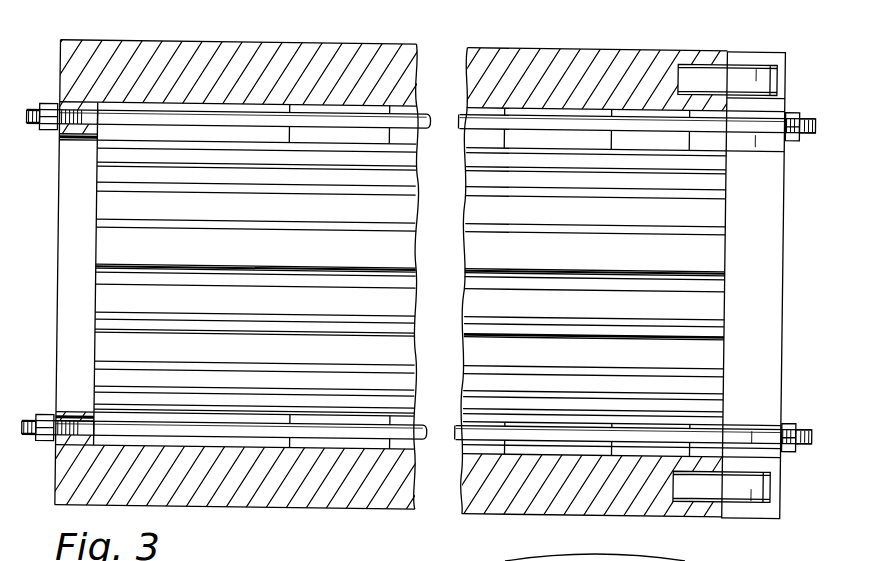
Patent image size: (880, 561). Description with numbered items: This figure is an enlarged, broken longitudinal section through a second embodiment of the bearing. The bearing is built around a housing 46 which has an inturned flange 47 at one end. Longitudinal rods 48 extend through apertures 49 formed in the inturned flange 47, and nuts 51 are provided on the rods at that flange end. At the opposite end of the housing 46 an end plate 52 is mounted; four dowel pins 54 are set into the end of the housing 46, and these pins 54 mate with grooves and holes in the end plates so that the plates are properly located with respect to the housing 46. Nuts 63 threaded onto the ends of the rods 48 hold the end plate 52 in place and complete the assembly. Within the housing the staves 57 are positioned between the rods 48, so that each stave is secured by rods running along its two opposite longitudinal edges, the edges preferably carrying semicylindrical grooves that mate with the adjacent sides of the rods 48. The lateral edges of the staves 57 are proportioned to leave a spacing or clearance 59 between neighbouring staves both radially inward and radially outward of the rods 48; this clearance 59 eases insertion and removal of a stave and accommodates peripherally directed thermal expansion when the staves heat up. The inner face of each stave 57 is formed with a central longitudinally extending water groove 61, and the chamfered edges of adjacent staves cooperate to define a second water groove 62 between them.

The housing 46 is at (371, 505).
The inturned flange 47 is at (77, 136).
The rods 48 is at (332, 113).
The apertures 49 is at (81, 112).
The nuts 51 is at (46, 103).
The end plate 52 is at (771, 512).
The dowel pins 54 is at (771, 76).
The staves 57 is at (106, 290).
The spacing or clearance 59 is at (253, 270).
The water groove 61 is at (556, 228).
The second water groove 62 is at (338, 270).
The nuts 63 is at (797, 138).